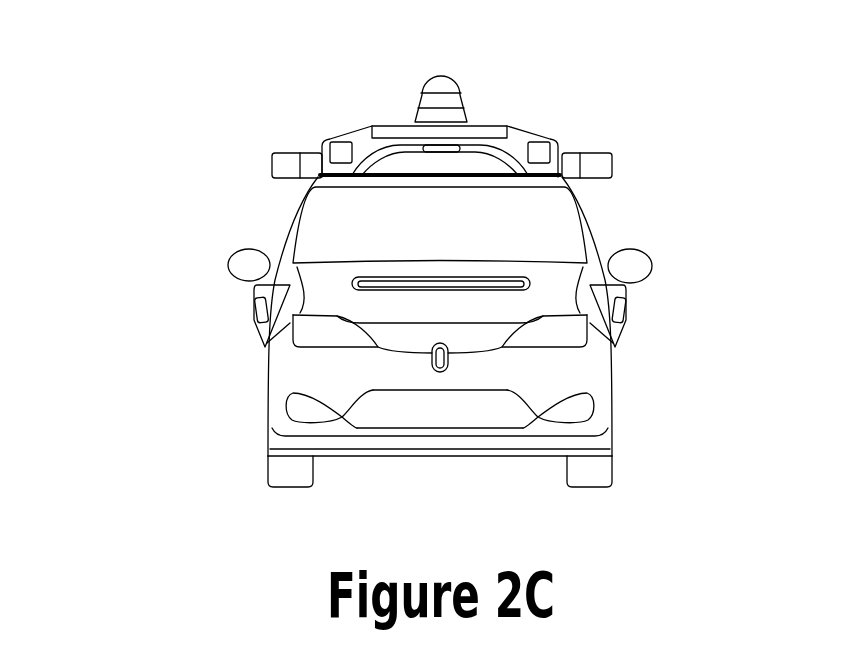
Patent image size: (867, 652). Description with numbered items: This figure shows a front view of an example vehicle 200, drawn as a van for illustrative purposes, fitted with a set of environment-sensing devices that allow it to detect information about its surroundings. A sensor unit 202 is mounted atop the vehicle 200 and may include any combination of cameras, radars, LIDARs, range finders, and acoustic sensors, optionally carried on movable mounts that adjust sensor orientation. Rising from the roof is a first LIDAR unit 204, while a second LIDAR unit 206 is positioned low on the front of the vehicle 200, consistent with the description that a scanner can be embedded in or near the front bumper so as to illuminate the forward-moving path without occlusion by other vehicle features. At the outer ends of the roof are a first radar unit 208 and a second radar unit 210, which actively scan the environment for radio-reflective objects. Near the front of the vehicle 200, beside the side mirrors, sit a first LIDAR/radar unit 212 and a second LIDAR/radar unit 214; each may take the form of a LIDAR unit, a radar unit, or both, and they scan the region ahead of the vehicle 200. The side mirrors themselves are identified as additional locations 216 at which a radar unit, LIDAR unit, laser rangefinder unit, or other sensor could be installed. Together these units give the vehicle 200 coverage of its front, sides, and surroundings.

The vehicle 200 is at (106, 118).
The sensor unit 202 is at (440, 153).
The first LIDAR unit 204 is at (412, 103).
The second LIDAR unit 206 is at (437, 372).
The first radar unit 208 is at (613, 167).
The second radar unit 210 is at (272, 163).
The first LIDAR/radar unit 212 is at (627, 302).
The second LIDAR/radar unit 214 is at (253, 300).
The additional location 216 is at (257, 248).